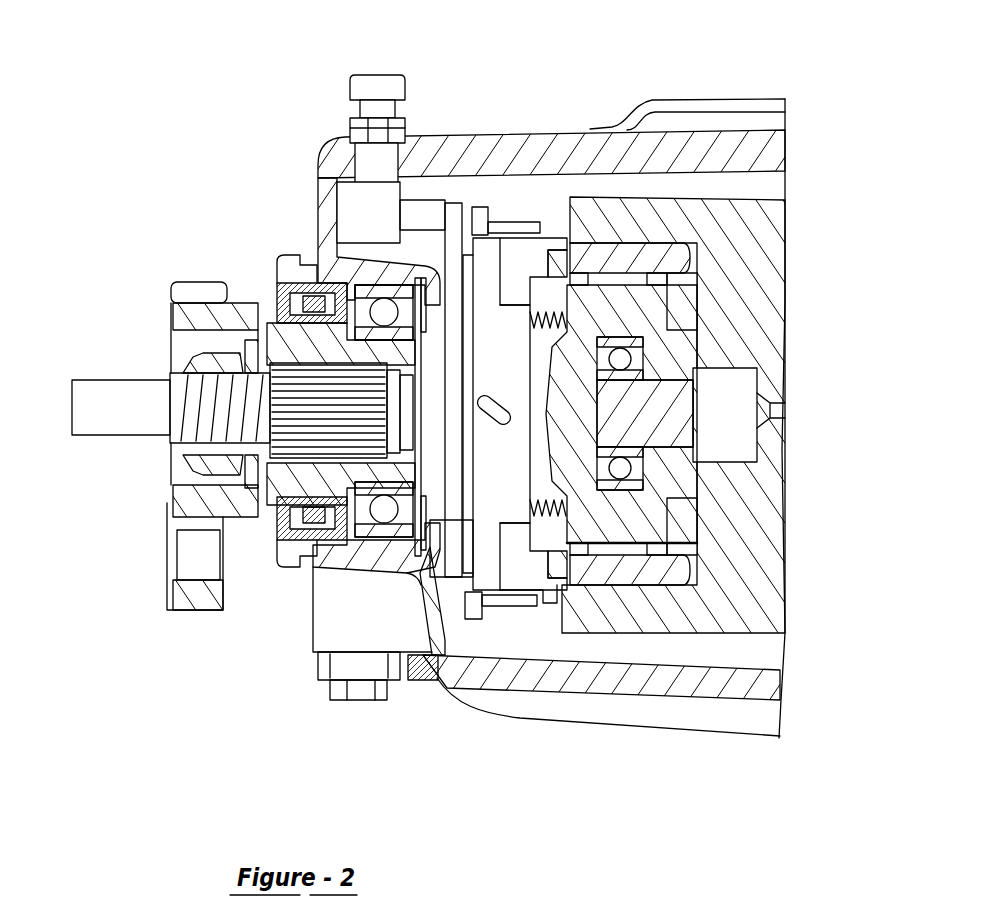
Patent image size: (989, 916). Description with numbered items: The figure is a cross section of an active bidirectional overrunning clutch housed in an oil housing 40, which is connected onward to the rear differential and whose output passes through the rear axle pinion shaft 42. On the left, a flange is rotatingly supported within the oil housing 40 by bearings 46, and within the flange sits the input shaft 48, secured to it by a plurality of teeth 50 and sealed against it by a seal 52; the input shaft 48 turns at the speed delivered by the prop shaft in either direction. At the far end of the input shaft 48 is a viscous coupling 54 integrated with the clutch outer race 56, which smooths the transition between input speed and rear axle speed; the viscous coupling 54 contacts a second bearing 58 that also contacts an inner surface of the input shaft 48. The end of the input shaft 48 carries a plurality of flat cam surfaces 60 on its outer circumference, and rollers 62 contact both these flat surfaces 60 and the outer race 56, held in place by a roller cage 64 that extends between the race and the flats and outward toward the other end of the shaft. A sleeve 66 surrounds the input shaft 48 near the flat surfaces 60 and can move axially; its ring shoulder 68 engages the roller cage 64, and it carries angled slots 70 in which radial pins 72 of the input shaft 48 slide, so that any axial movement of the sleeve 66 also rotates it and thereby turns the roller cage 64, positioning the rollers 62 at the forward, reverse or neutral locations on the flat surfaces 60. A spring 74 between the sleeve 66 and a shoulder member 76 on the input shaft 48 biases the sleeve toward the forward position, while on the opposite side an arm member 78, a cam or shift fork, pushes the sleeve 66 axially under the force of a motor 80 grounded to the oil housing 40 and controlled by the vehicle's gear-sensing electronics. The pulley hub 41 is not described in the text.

The oil housing 40 is at (503, 150).
The pulley hub 41 is at (193, 522).
The rear axle pinion shaft 42 is at (773, 380).
The bearings 46 is at (383, 305).
The input shaft 48 is at (277, 492).
The teeth 50 is at (287, 377).
The seal 52 is at (287, 297).
The viscous coupling 54 is at (746, 215).
The outer race 56 is at (660, 230).
The second bearing 58 is at (687, 472).
The flat surfaces 60 is at (565, 285).
The rollers 62 is at (637, 282).
The roller cage 64 is at (548, 245).
The sleeve 66 is at (510, 517).
The ring shoulder 68 is at (508, 505).
The slots 70 is at (483, 397).
The pins 72 is at (510, 428).
The spring 74 is at (560, 480).
The shoulder member 76 is at (537, 262).
The arm member 78 is at (457, 253).
The motor 80 is at (367, 200).